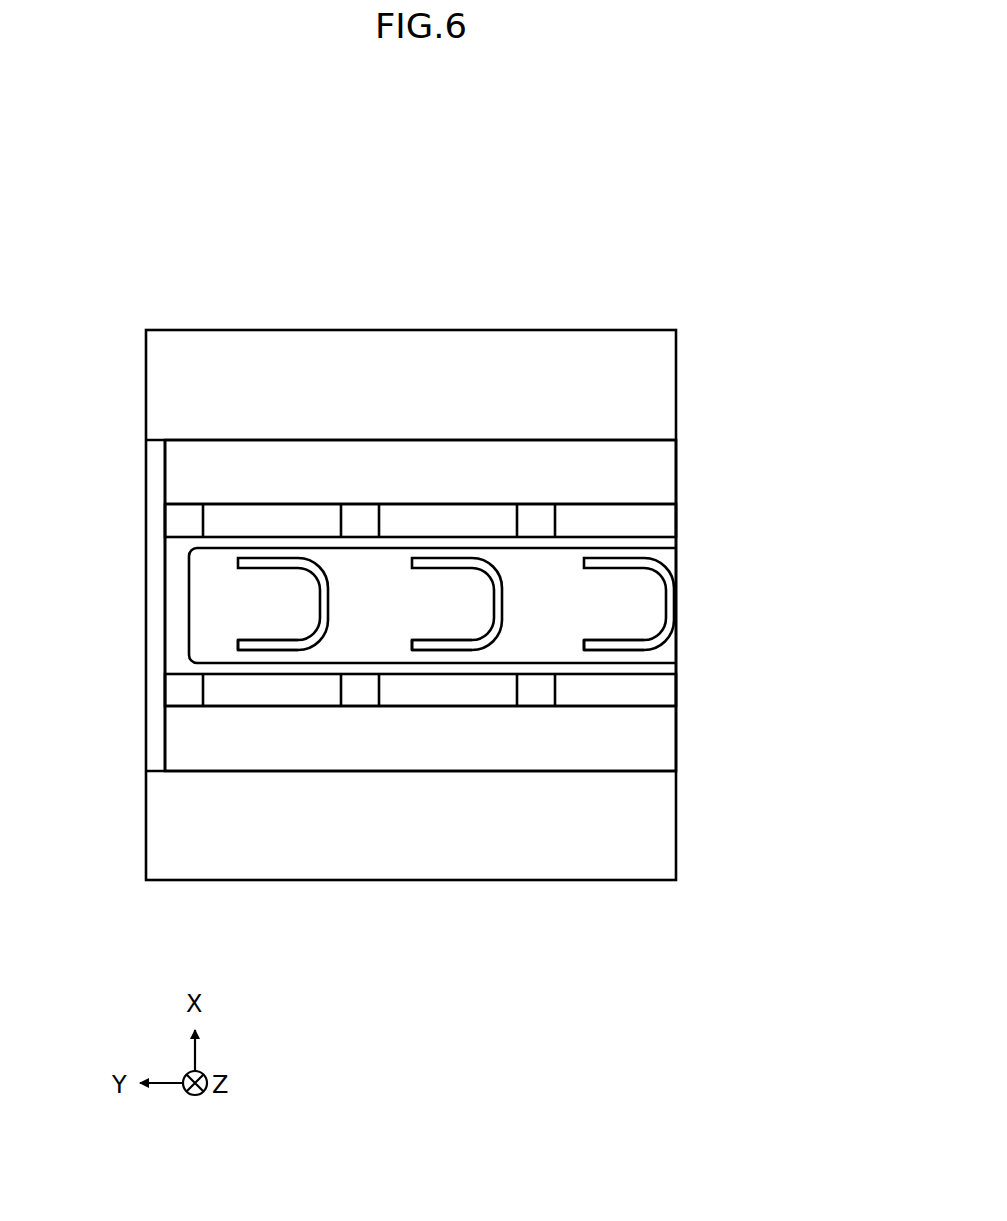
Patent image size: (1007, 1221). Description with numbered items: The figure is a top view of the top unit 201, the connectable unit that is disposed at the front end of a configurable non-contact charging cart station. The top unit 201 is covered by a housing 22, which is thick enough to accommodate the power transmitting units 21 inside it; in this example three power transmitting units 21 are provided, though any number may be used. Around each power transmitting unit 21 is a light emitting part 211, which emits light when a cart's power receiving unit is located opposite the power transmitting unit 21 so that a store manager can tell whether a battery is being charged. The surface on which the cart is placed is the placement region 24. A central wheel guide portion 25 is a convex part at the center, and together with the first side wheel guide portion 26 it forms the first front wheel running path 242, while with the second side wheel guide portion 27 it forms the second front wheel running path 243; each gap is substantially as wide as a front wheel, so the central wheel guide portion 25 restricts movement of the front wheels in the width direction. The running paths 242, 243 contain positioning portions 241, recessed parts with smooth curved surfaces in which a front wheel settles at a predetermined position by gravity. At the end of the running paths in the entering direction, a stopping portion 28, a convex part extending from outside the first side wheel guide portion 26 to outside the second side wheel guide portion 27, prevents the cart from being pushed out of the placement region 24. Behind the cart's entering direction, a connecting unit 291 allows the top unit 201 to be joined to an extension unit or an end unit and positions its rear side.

The top unit 201 is at (457, 165).
The power transmitting unit 21 is at (275, 590).
The light emitting part 211 is at (255, 645).
The housing 22 is at (152, 407).
The placement region 24 is at (749, 406).
The positioning portion 241 is at (182, 520).
The first front wheel running path 242 is at (664, 690).
The second front wheel running path 243 is at (664, 520).
The central wheel guide portion 25 is at (664, 558).
The first side wheel guide portion 26 is at (664, 740).
The second side wheel guide portion 27 is at (664, 474).
The stopping portion 28 is at (152, 592).
The connecting unit 291 is at (752, 606).